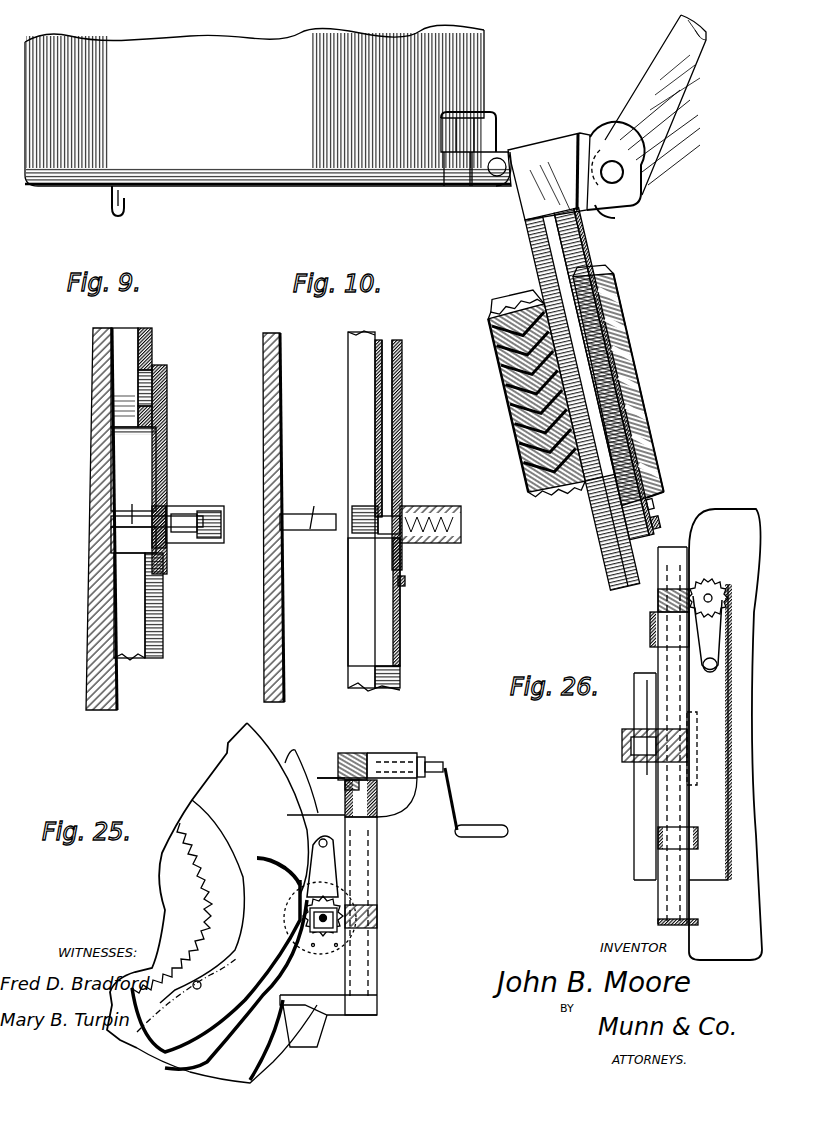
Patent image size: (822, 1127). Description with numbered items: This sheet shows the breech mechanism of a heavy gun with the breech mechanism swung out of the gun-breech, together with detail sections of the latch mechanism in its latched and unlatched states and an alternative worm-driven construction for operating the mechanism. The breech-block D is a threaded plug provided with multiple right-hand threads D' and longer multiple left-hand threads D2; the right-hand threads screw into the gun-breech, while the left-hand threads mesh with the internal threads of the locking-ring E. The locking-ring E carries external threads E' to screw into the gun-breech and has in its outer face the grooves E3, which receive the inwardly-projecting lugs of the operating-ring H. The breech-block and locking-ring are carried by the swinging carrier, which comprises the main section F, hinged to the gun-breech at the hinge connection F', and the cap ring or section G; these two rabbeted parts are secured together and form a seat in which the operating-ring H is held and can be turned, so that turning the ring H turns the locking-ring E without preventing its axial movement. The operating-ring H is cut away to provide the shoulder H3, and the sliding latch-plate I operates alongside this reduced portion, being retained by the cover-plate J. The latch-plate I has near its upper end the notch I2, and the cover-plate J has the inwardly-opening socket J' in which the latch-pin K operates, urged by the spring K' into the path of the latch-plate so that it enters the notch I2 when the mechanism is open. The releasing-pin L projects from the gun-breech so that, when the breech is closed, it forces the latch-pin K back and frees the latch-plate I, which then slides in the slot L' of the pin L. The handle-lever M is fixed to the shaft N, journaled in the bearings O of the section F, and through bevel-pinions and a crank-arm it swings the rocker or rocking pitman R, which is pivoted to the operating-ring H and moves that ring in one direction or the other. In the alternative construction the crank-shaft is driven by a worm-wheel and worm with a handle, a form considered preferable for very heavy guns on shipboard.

In FIG. 8, the casing / cover C is at (268, 105).
In FIG. 9, the casing / cover C is at (123, 673).
In FIG. 10, the casing / cover C is at (285, 600).
In FIG. 8, the releasing-pin L is at (96, 207).
In FIG. 9, the releasing-pin L is at (157, 506).
In FIG. 10, the releasing-pin L is at (308, 507).
In FIG. 8, the slot L' is at (142, 203).
In FIG. 8, the hinge connection F' is at (562, 335).
In FIG. 8, the handle-lever M is at (684, 104).
In FIG. 8, the shaft N is at (618, 172).
In FIG. 8, the bearings O is at (626, 192).
In FIG. 8, the rocker or rocking pitman R is at (578, 247).
In FIG. 8, the breech-block D is at (528, 399).
In FIG. 8, the right-hand threads D' is at (502, 405).
In FIG. 8, the left-hand threads D2 is at (537, 320).
In FIG. 8, the cap ring or section G is at (608, 304).
In FIG. 8, the locking-ring E is at (617, 387).
In FIG. 8, the grooves E3 is at (618, 364).
In FIG. 8, the external threads E' is at (665, 424).
In FIG. 8, the main section of swinging carrier F is at (524, 406).
In FIG. 8, the cover-plate J is at (647, 527).
In FIG. 9, the cover-plate J is at (172, 469).
In FIG. 10, the cover-plate J is at (409, 463).
In FIG. 8, the inwardly-opening socket J' is at (652, 501).
In FIG. 9, the inwardly-opening socket J' is at (182, 488).
In FIG. 9, the operating-ring H is at (125, 355).
In FIG. 10, the operating-ring H is at (338, 415).
In FIG. 9, the shoulder H3 is at (120, 560).
In FIG. 10, the shoulder H3 is at (354, 672).
In FIG. 9, the latch-plate I is at (133, 490).
In FIG. 10, the latch-plate I is at (374, 602).
In FIG. 9, the notch I2 is at (147, 400).
In FIG. 10, the notch I2 is at (402, 553).
In FIG. 9, the latch-pin K is at (195, 543).
In FIG. 10, the latch-pin K is at (408, 538).
In FIG. 9, the spring K' is at (192, 513).
In FIG. 10, the spring K' is at (404, 503).